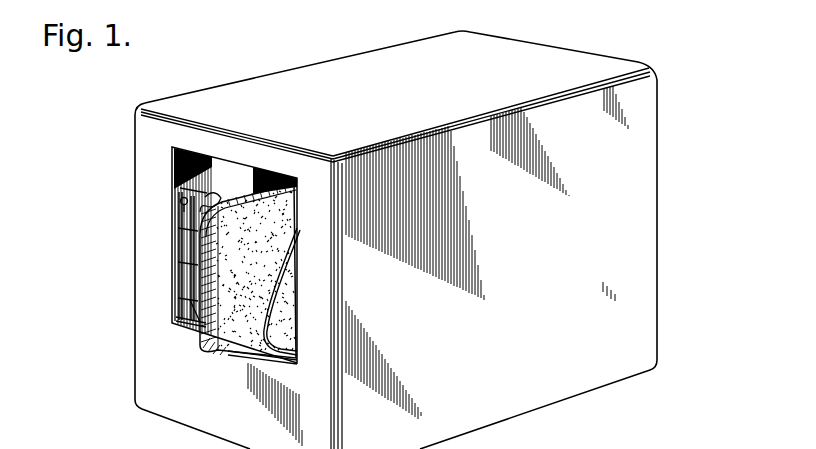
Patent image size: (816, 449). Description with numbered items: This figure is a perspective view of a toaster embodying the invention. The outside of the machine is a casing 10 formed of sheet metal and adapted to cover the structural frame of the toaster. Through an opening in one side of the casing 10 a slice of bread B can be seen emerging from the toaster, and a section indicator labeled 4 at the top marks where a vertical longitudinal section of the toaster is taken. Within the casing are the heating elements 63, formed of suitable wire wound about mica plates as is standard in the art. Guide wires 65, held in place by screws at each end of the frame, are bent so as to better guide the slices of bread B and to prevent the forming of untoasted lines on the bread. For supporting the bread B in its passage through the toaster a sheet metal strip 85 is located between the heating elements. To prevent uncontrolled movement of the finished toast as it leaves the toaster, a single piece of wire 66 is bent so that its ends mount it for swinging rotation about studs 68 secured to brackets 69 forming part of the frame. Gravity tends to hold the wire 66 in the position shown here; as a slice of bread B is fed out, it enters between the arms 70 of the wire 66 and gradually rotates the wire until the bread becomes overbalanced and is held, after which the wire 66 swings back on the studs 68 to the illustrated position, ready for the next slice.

The casing 10 is at (396, 240).
The section line for FIG. 4 is at (275, 20).
The heating elements 63 is at (184, 184).
The guide wires 65 is at (207, 197).
The wire 66 is at (193, 231).
The studs 68 is at (207, 192).
The brackets 69 is at (181, 201).
The arms 70 is at (182, 266).
The sheet metal strip 85 is at (198, 303).
The bread B is at (243, 197).